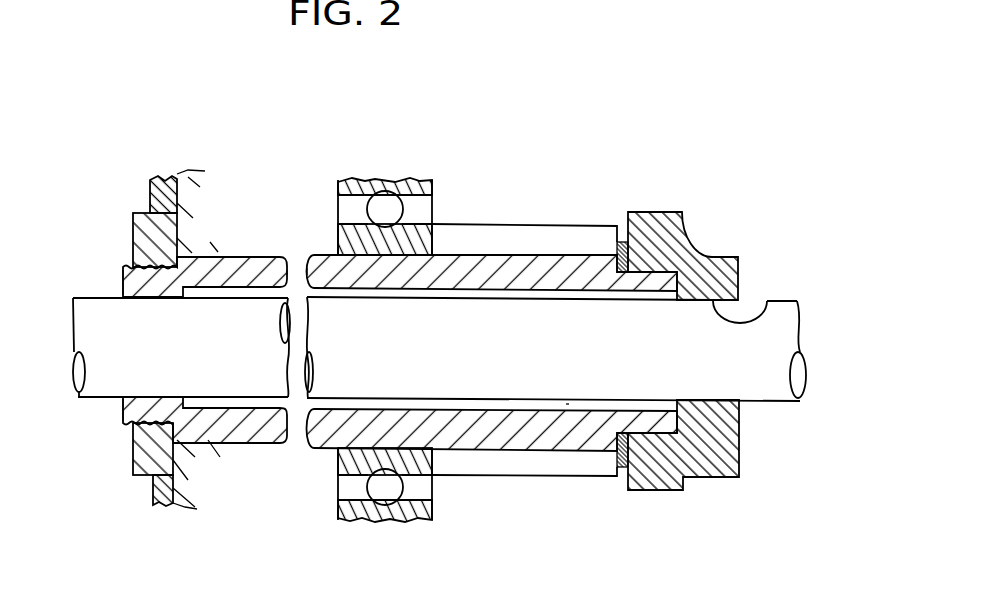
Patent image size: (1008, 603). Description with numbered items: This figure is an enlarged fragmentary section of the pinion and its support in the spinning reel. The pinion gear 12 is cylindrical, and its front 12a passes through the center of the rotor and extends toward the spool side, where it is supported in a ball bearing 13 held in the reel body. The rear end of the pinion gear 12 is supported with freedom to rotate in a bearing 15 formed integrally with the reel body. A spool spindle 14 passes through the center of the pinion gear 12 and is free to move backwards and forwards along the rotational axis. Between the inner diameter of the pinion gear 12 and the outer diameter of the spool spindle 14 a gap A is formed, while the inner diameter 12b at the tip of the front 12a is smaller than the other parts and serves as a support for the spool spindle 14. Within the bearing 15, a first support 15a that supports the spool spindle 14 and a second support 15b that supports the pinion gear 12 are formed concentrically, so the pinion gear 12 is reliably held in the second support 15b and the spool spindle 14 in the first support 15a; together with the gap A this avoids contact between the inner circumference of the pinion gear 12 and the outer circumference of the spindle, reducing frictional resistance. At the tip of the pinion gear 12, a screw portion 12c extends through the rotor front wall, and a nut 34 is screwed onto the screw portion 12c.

The pinion gear 12 is at (515, 238).
The front 12a is at (327, 256).
The inner diameter 12b is at (123, 276).
The screw portion 12c is at (131, 425).
The ball bearing 13 is at (424, 512).
The spool spindle 14 is at (340, 390).
The bearing 15 is at (682, 216).
The first support 15a is at (764, 304).
The second support 15b is at (650, 274).
The nut 34 is at (146, 213).
The gap A is at (567, 403).